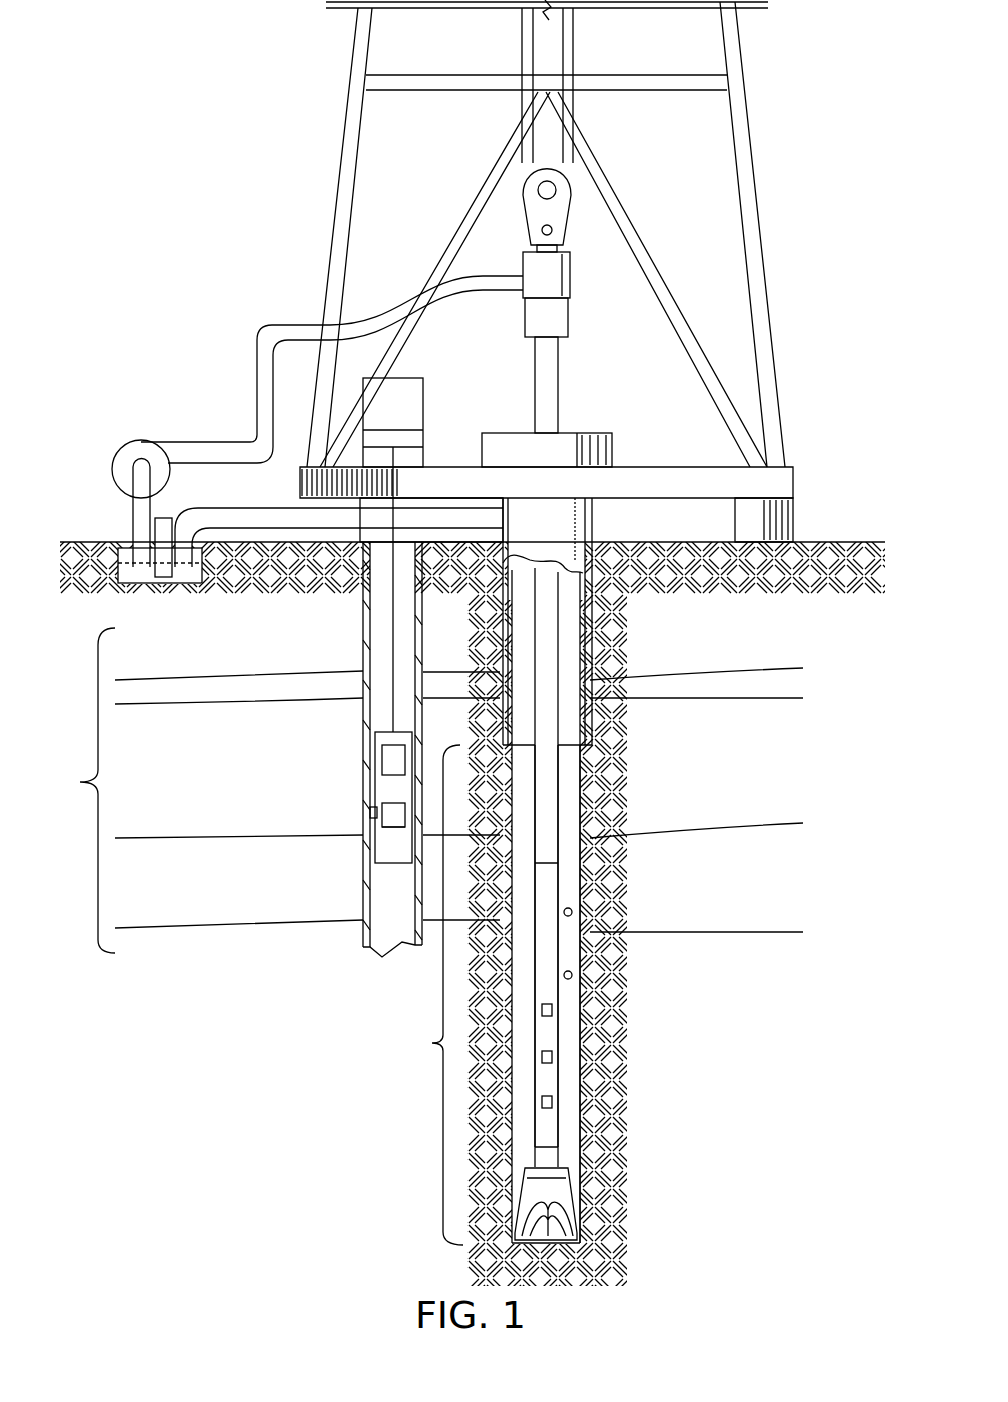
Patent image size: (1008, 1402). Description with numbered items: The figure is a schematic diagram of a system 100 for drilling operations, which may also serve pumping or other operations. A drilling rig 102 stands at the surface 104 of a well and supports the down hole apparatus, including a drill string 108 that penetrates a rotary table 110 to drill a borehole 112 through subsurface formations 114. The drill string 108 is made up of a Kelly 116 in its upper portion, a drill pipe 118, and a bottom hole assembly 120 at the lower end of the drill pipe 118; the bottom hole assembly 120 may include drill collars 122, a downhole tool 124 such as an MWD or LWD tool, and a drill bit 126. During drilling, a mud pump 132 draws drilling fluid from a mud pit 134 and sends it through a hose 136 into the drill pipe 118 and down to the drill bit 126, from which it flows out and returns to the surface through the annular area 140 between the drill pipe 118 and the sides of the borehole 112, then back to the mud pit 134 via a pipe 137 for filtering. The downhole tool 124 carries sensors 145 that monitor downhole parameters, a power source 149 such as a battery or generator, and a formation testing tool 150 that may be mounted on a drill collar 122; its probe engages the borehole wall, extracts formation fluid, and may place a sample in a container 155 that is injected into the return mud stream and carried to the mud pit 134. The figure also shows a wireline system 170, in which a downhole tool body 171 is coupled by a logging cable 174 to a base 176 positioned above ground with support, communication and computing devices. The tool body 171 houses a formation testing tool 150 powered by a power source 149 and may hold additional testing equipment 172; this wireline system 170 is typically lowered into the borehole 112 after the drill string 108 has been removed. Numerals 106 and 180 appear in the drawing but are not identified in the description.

The system 100 is at (236, 141).
The drilling rig 102 is at (768, 236).
The surface 104 is at (800, 542).
The wellhead 106 is at (604, 530).
The drill string 108 is at (562, 670).
The rotary table 110 is at (493, 433).
The borehole 112 is at (363, 652).
The subsurface formations 114 is at (417, 790).
The Kelly 116 is at (559, 352).
The drill pipe 118 is at (548, 770).
The bottom hole assembly 120 is at (421, 995).
The drill collars 122 is at (590, 735).
The downhole tool 124 is at (551, 877).
The drill bit 126 is at (560, 1200).
The mud pump 132 is at (141, 440).
The mud pit 134 is at (146, 582).
The hose 136 is at (257, 390).
The pipe 137 is at (275, 508).
The annular area 140 is at (572, 793).
The sensors 145 is at (554, 1010).
The power source 149 is at (392, 820).
The formation testing tool 150 is at (378, 812).
The container 155 is at (573, 910).
The wireline system 170 is at (343, 727).
The downhole tool body 171 is at (375, 788).
The additional testing equipment 172 is at (393, 752).
The logging cable 174 is at (393, 617).
The base 176 is at (412, 378).
The drain pipe 180 is at (170, 592).